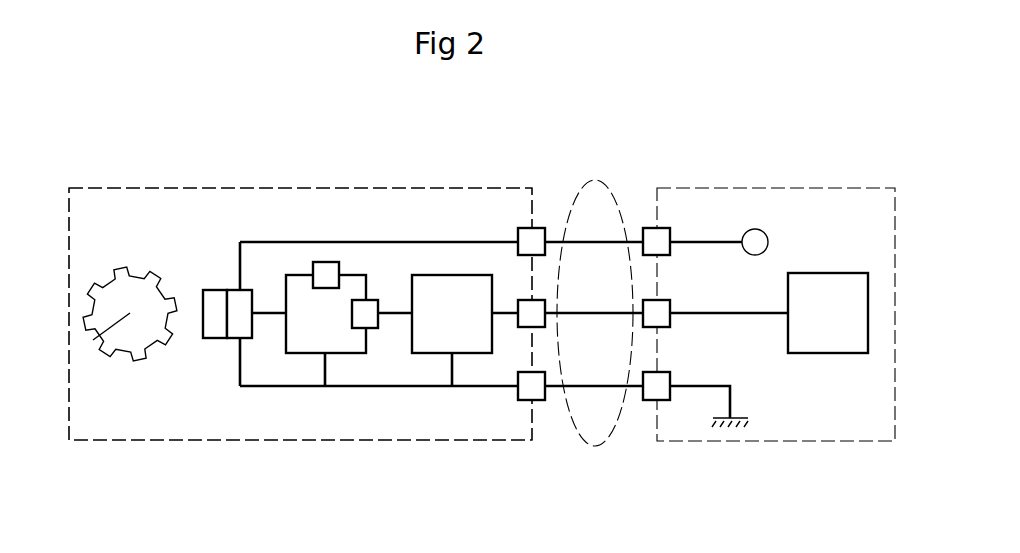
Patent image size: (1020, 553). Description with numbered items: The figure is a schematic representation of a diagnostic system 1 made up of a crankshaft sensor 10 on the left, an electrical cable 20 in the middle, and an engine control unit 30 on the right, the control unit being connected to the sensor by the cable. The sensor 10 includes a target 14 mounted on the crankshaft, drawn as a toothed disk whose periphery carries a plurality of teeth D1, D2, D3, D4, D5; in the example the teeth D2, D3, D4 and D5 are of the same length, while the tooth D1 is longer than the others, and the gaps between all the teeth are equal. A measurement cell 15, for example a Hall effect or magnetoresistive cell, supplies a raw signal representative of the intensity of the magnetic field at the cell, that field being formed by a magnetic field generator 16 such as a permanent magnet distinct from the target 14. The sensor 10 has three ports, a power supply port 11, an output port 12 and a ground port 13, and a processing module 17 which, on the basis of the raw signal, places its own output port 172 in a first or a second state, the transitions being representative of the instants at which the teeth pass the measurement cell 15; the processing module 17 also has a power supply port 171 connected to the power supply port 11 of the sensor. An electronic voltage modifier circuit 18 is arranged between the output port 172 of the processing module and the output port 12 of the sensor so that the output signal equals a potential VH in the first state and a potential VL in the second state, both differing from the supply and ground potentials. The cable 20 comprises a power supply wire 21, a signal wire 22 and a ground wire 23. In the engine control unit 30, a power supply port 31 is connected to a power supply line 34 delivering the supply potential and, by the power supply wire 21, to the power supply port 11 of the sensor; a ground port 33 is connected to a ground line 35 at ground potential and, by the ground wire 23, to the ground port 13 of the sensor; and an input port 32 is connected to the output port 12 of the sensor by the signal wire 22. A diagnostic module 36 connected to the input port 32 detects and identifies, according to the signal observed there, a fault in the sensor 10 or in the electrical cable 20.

The diagnostic system 1 is at (182, 148).
The crankshaft sensor 10 is at (406, 188).
The power supply port 11 is at (527, 228).
The output port 12 is at (522, 300).
The ground port 13 is at (525, 400).
The target 14 is at (85, 343).
The measurement cell 15 is at (252, 300).
The magnetic field generator 16 is at (220, 290).
The processing module 17 is at (326, 314).
The power supply port 171 is at (326, 262).
The output port 172 is at (378, 328).
The electronic voltage modifier circuit 18 is at (452, 314).
The electrical cable 20 is at (578, 433).
The power supply wire 21 is at (593, 242).
The signal wire 22 is at (593, 313).
The ground wire 23 is at (593, 386).
The engine control unit 30 is at (832, 188).
The power supply port 31 is at (661, 228).
The input port 32 is at (670, 327).
The ground port 33 is at (660, 400).
The power supply line 34 is at (706, 242).
The ground line 35 is at (730, 425).
The diagnostic module 36 is at (828, 313).
The tooth D1 is at (93, 313).
The tooth D2 is at (137, 363).
The tooth D3 is at (172, 347).
The tooth D4 is at (172, 300).
The tooth D5 is at (137, 273).